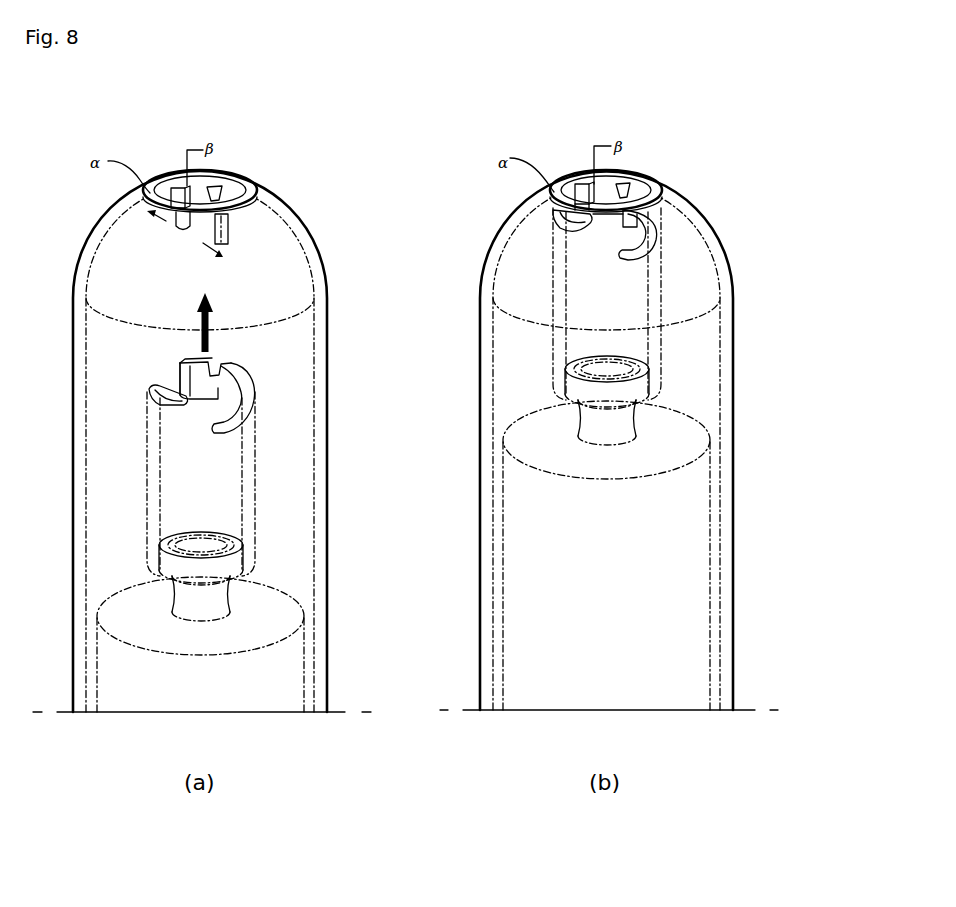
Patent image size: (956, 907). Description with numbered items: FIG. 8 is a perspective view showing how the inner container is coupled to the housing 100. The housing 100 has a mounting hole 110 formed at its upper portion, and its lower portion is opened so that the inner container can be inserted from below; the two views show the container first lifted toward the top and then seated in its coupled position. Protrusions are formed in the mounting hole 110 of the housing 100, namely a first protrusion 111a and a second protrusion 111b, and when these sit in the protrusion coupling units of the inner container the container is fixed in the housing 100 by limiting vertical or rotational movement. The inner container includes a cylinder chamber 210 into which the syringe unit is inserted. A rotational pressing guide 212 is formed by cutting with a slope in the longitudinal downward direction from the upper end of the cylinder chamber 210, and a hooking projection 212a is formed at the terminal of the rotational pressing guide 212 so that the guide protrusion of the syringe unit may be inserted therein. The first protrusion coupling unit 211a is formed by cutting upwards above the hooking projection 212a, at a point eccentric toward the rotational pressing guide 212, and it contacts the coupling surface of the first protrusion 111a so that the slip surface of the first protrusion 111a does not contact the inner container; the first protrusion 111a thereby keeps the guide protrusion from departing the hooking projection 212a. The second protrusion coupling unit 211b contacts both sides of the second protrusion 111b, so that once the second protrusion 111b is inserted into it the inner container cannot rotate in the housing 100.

The housing 100 is at (329, 271).
The mounting hole 110 is at (240, 176).
The first protrusion 111a is at (177, 188).
The second protrusion 111b is at (217, 182).
The cylinder chamber 210 is at (258, 494).
The first protrusion coupling unit 211a is at (178, 365).
The second protrusion coupling unit 211b is at (178, 397).
The rotational pressing guide 212 is at (406, 330).
The hooking projection 212a is at (238, 427).